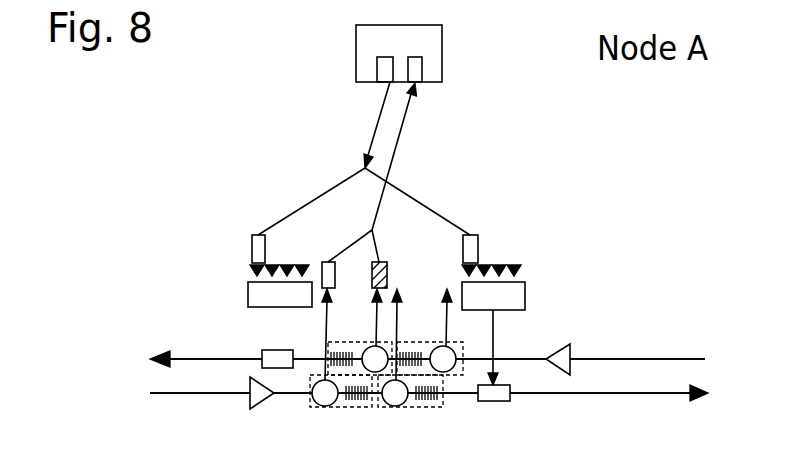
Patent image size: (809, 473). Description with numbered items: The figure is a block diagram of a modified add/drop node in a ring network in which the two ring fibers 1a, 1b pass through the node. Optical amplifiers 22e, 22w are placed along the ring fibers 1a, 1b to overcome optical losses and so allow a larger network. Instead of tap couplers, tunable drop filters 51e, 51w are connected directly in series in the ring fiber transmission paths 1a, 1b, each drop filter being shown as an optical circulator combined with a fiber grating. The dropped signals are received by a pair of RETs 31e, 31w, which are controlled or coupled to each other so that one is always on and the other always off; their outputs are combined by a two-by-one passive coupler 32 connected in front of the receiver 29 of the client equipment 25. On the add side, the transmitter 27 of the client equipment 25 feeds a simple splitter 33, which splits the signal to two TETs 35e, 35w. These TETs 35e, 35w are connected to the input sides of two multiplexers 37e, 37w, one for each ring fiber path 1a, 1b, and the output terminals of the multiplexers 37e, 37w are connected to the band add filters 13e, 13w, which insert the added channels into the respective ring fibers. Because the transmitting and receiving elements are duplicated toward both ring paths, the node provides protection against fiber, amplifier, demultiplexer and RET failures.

The client equipment 25 is at (356, 42).
The transmitter 27 is at (377, 72).
The receiver 29 is at (422, 76).
The simple splitter 33 is at (360, 170).
The 2×1 passive coupler 32 is at (371, 230).
The RET 31e is at (325, 262).
The RET 31w is at (367, 283).
The TET 35e is at (256, 235).
The TET 35w is at (470, 235).
The multiplexer 37e is at (248, 296).
The multiplexer 37w is at (525, 296).
The add filter 13e is at (268, 350).
The add filter 13w is at (495, 401).
The tunable drop filter 51e is at (314, 408).
The tunable drop filter 51w is at (416, 343).
The optical amplifier 22e is at (262, 405).
The optical amplifier 22w is at (572, 351).
The ring fiber 1a is at (690, 359).
The ring fiber 1b is at (678, 396).